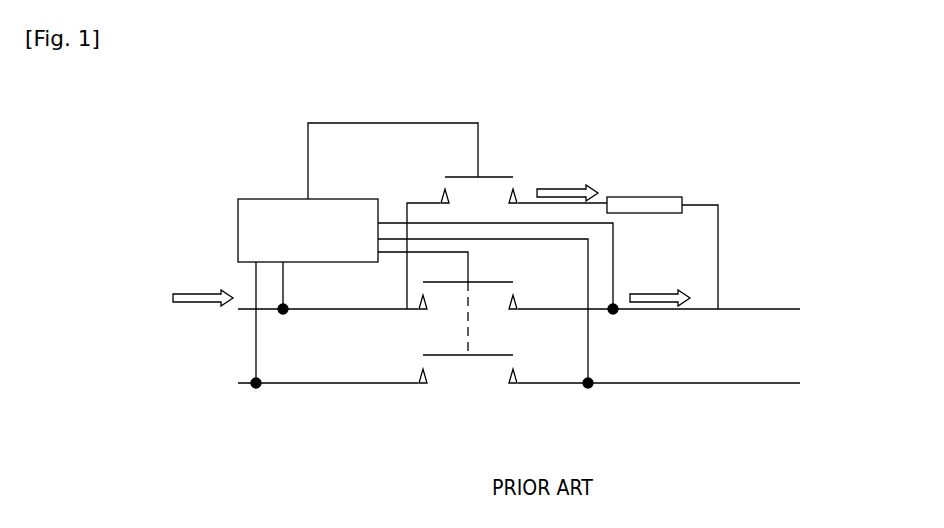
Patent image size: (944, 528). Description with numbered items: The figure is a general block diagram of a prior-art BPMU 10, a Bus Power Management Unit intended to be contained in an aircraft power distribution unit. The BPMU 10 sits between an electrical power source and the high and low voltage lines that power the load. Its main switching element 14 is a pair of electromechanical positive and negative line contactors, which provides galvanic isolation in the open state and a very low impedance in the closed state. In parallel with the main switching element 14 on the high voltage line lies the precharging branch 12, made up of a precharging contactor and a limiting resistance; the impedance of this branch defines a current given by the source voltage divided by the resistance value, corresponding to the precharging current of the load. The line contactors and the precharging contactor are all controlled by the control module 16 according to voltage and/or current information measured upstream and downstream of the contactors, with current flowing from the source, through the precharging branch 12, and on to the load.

The BPMU 10 is at (700, 140).
The precharging branch 12 is at (718, 222).
The main switching element 14 is at (532, 333).
The control module 16 is at (318, 237).